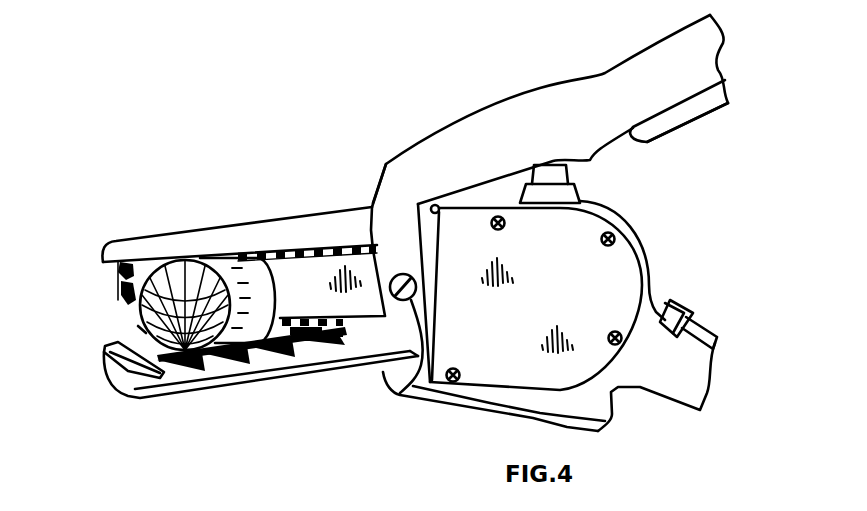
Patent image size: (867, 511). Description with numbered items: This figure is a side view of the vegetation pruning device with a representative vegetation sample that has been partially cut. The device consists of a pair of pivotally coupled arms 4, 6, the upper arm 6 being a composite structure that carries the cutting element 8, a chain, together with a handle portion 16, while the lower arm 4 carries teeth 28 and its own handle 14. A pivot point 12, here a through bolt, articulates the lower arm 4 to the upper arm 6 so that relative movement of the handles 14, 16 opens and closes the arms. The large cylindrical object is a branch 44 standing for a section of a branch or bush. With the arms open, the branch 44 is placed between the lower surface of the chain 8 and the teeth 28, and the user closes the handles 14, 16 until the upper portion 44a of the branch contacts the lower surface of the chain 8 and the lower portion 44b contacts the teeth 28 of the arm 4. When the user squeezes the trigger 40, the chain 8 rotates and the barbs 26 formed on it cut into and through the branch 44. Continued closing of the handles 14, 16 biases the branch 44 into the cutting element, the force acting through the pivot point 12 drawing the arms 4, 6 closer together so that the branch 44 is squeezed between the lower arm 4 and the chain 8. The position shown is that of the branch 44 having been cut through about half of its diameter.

The lower arm 4 is at (289, 370).
The upper arm 6 is at (302, 190).
The cutting element 8 is at (122, 272).
The pivot point 12 is at (417, 372).
The handle 14 is at (545, 112).
The handle portion 16 is at (661, 377).
The barbs 26 is at (122, 283).
The teeth 28 is at (107, 362).
The trigger 40 is at (668, 114).
The branch 44 is at (142, 332).
The upper portion of branch 44a is at (197, 255).
The lower portion of branch 44b is at (190, 342).